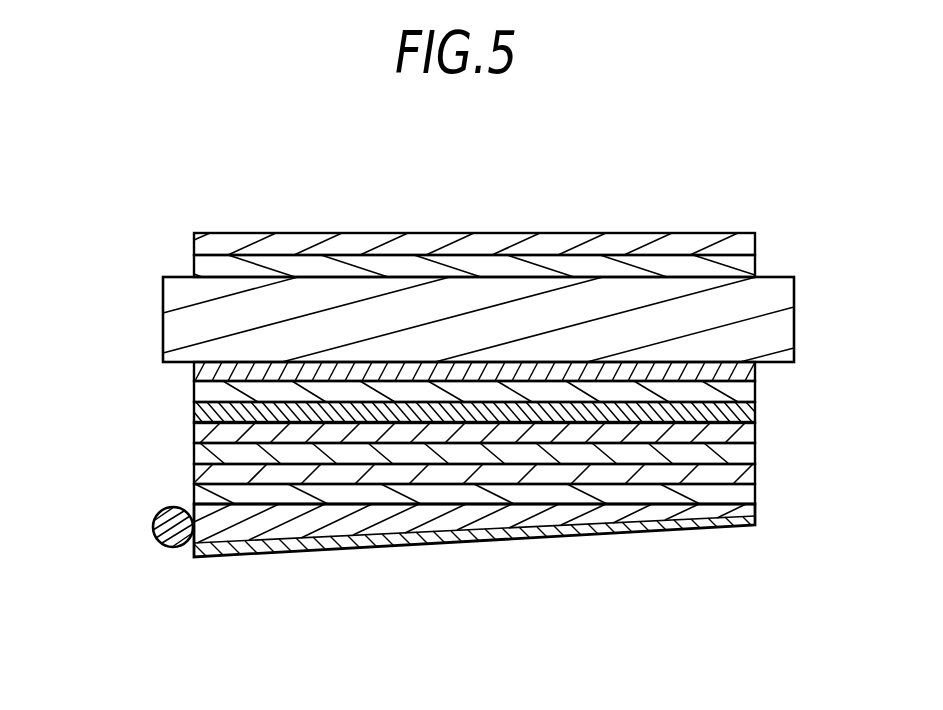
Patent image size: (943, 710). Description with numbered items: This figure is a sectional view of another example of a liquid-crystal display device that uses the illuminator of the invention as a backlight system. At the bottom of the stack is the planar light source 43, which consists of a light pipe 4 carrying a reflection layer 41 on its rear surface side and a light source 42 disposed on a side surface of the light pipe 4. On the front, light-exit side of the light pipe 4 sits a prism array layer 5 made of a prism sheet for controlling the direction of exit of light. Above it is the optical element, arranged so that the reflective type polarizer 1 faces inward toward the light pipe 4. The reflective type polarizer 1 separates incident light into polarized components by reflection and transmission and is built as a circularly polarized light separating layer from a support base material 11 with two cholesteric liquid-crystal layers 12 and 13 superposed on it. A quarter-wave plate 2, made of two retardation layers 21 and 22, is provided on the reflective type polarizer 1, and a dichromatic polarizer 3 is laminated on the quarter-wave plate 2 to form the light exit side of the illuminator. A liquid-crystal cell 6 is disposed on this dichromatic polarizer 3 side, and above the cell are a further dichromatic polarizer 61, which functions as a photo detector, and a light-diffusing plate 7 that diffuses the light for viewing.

The reflective type polarizer 1 is at (532, 457).
The support base material 11 is at (757, 488).
The cholesteric liquid-crystal layer 12 is at (757, 465).
The cholesteric liquid-crystal layer 13 is at (757, 441).
The quarter-wave plate 2 is at (534, 397).
The retardation layer 21 is at (757, 418).
The retardation layer 22 is at (757, 395).
The dichromatic polarizer 3 is at (757, 376).
The light pipe 4 is at (426, 536).
The reflection layer 41 is at (645, 524).
The light source 42 is at (139, 529).
The planar light source 43 is at (389, 536).
The prism array layer 5 is at (757, 506).
The liquid-crystal cell 6 is at (796, 326).
The dichromatic polarizer 61 is at (757, 273).
The light-diffusing plate 7 is at (757, 244).